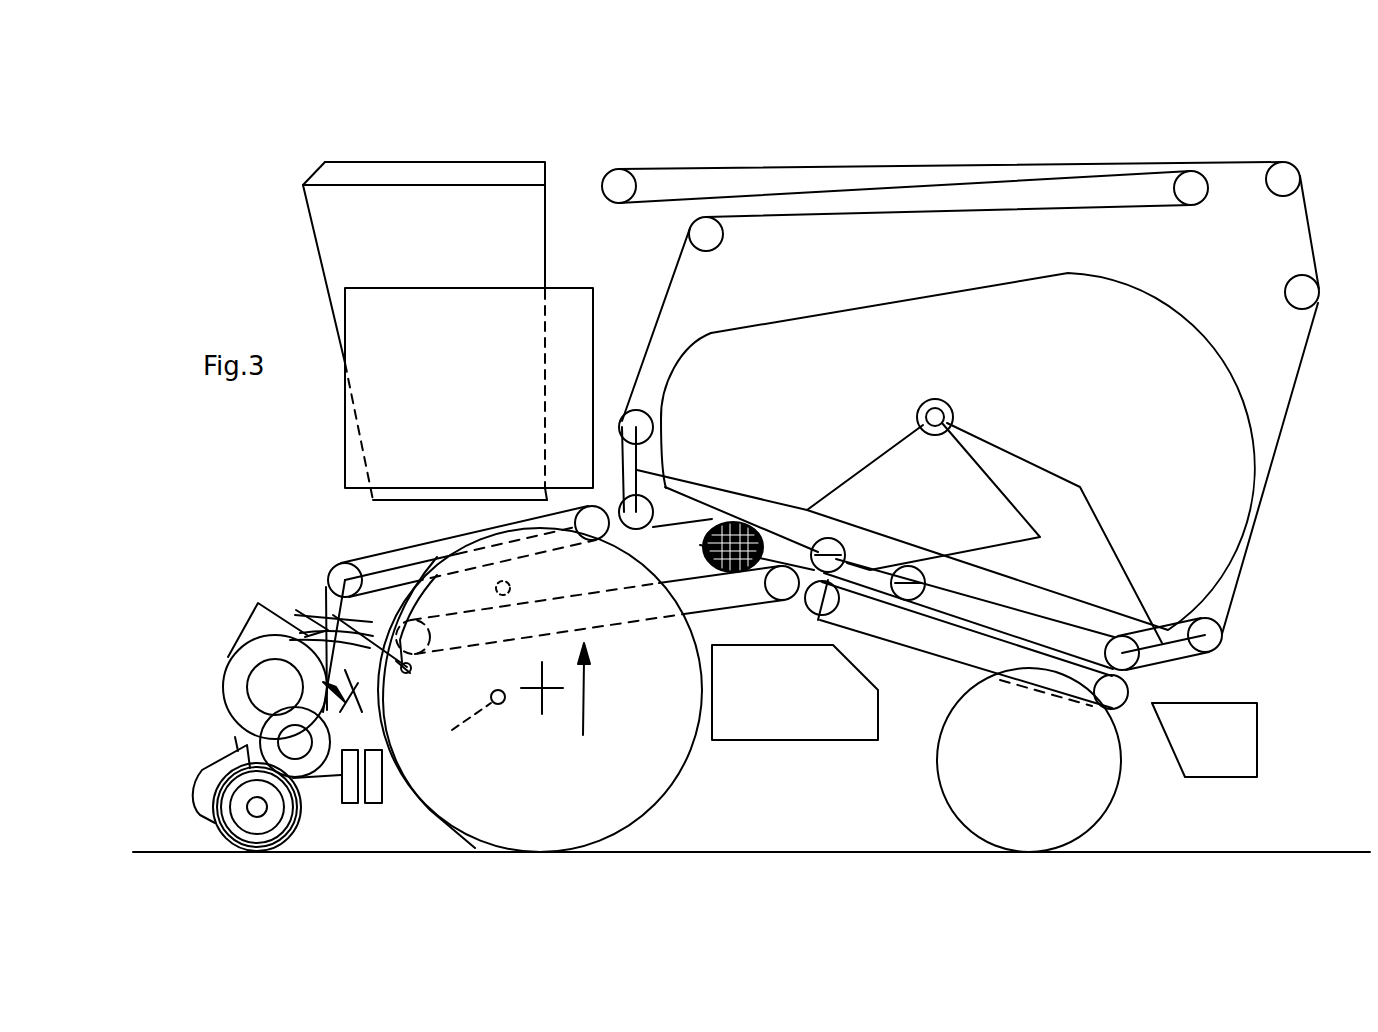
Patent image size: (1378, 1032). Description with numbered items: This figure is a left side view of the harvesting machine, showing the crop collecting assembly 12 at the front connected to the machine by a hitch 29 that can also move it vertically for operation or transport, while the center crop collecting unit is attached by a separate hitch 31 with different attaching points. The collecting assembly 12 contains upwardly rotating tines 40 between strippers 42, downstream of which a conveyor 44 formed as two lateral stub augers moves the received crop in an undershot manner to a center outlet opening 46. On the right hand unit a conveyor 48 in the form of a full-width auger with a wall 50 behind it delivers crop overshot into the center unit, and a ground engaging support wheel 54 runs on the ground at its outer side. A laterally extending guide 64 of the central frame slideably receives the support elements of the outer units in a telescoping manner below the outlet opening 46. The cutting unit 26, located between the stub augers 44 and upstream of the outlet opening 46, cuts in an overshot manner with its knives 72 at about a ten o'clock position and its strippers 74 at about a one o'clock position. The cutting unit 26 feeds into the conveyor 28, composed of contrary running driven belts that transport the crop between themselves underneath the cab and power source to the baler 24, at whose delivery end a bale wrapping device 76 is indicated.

The crop collecting assembly 12 is at (128, 620).
The baler 24 is at (894, 128).
The cutting unit 26 is at (238, 587).
The conveyor 28 is at (586, 708).
The hitch 29 is at (452, 730).
The hitch 31 is at (388, 600).
The tines 40 is at (190, 795).
The strippers 42 is at (203, 770).
The conveyor 44 is at (224, 683).
The center outlet opening 46 is at (320, 687).
The conveyor 48 is at (306, 763).
The wall 50 is at (357, 703).
The ground engaging support wheel 54 is at (258, 828).
The guide 64 is at (350, 805).
The knives 72 is at (240, 628).
The strippers 74 is at (331, 641).
The bale wrapping device 76 is at (1285, 718).